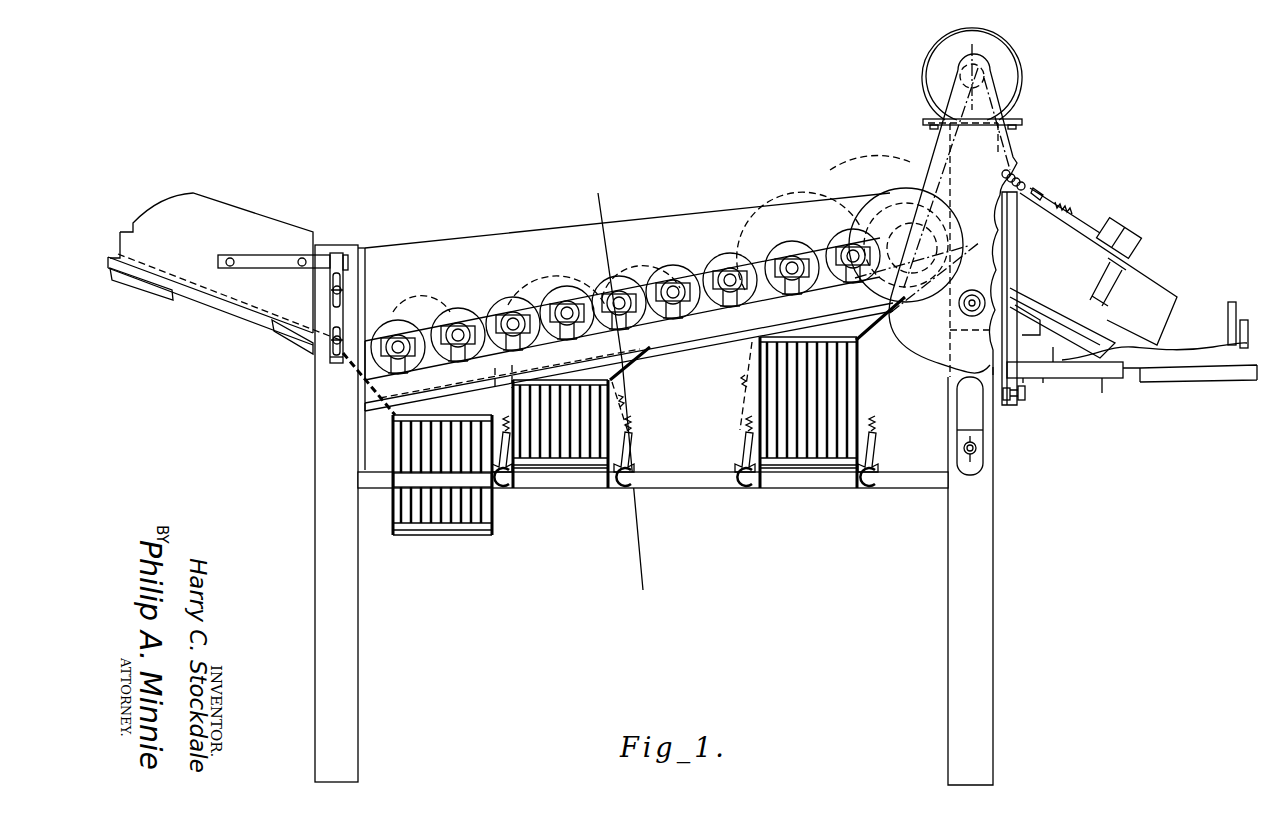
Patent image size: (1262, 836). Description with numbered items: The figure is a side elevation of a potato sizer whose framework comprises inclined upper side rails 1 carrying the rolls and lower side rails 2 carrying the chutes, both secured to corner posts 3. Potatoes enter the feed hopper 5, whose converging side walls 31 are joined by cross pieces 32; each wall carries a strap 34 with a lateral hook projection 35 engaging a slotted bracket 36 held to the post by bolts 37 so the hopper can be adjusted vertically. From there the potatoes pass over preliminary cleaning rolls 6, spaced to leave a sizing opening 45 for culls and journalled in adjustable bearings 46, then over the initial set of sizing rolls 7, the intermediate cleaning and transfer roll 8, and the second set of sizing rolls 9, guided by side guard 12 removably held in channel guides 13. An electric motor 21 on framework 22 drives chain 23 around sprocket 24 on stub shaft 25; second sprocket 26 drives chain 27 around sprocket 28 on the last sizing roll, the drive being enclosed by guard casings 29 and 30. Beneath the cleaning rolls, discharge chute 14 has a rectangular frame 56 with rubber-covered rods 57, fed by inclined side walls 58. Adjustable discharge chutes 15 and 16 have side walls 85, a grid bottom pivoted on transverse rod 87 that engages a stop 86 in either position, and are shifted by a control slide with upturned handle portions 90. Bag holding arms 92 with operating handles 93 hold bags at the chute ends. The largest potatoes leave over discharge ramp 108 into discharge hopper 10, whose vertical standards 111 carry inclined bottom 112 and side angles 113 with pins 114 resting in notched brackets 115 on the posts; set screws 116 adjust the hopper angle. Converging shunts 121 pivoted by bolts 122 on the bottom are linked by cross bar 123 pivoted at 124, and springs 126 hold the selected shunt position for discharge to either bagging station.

The inclined upper side rails 1 is at (700, 342).
The lower side rails 2 is at (715, 489).
The corner posts 3 is at (598, 193).
The feed hopper 5 is at (205, 304).
The preliminary cleaning rolls 6 is at (421, 289).
The initial set of sizing rolls 7 is at (556, 282).
The intermediate cleaning and transfer roll 8 is at (641, 267).
The second set of sizing rolls 9 is at (845, 210).
The discharge hopper 10 is at (1102, 211).
The side guard 12 is at (452, 244).
The channel guides 13 is at (368, 250).
The discharge chute 14 is at (443, 540).
The discharge chute 15 is at (560, 500).
The discharge chute 16 is at (795, 500).
The electric motor 21 is at (1002, 52).
The framework 22 is at (1023, 125).
The chain 23 is at (950, 140).
The sprocket 24 is at (984, 76).
The stub shaft 25 is at (950, 330).
The second sprocket 26 is at (971, 324).
The chain 27 is at (908, 343).
The sprocket 28 is at (885, 185).
The guard casing 29 is at (940, 133).
The guard casing 30 is at (858, 197).
The converging side walls 31 is at (207, 206).
The cross pieces 32 is at (155, 283).
The strap 34 is at (270, 252).
The lateral hook projection 35 is at (348, 253).
The bracket 36 is at (333, 360).
The bolts 37 is at (333, 292).
The sizing opening 45 is at (425, 322).
The bearings 46 is at (452, 352).
The rectangular frame 56 is at (393, 440).
The rods 57 is at (400, 452).
The inclined side walls 58 is at (368, 396).
The side walls 85 is at (520, 362).
The stop 86 is at (600, 489).
The transverse rod 87 is at (630, 412).
The upturned handle portions 90 is at (637, 463).
The bag holding arms 92 is at (497, 484).
The operating handles 93 is at (502, 436).
The discharge ramp 108 is at (950, 222).
The vertical standards 111 is at (1018, 256).
The inclined bottom 112 is at (1048, 306).
The side angles 113 is at (1085, 347).
The pin 114 is at (1035, 296).
The brackets 115 is at (1018, 330).
The set screw 116 is at (1026, 398).
The converging shunts 121 is at (1160, 292).
The bolts 122 is at (1044, 194).
The cross bar 123 is at (1132, 228).
The pivot 124 is at (1136, 258).
The springs 126 is at (1024, 178).